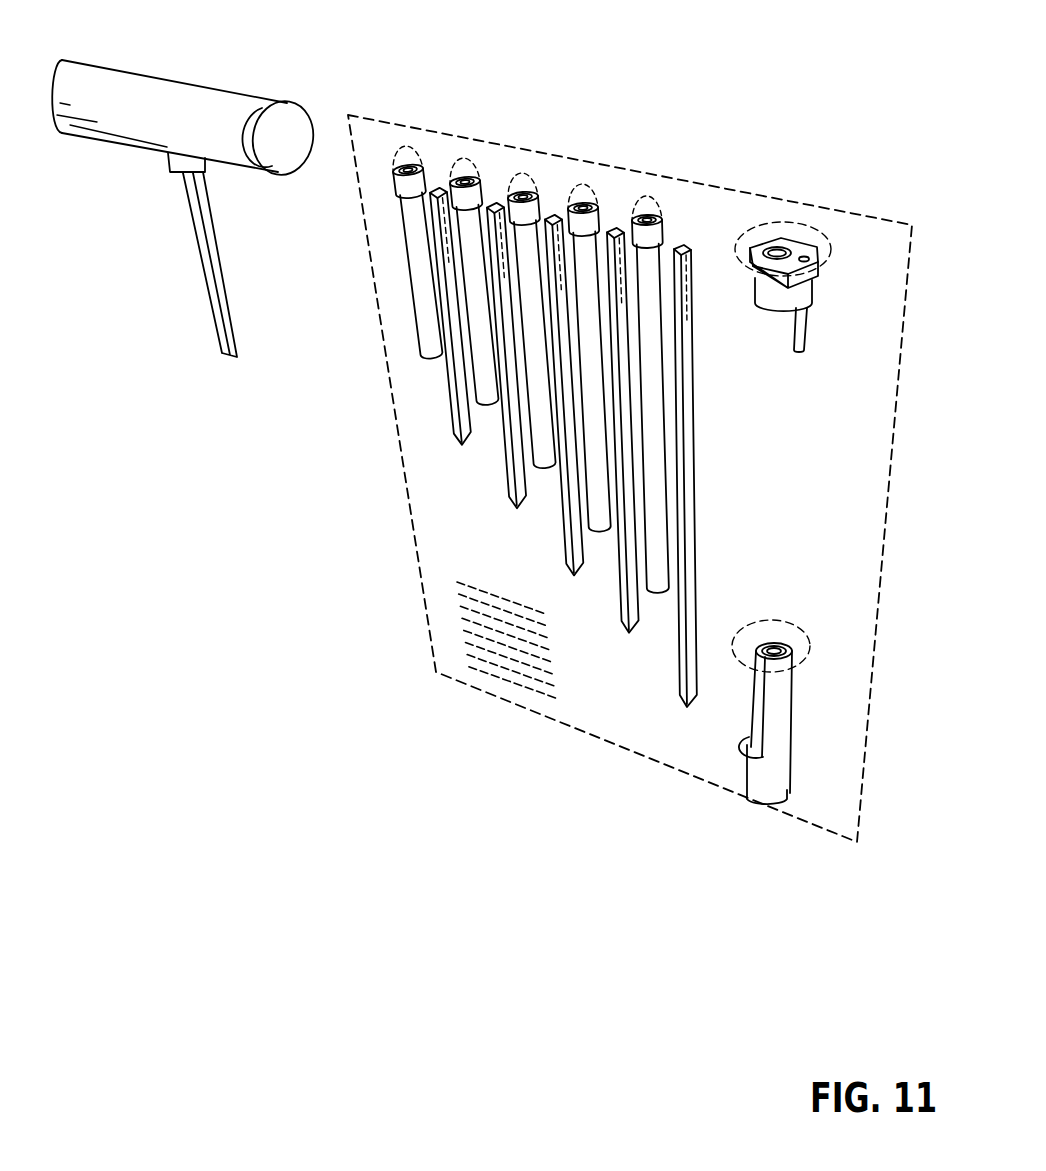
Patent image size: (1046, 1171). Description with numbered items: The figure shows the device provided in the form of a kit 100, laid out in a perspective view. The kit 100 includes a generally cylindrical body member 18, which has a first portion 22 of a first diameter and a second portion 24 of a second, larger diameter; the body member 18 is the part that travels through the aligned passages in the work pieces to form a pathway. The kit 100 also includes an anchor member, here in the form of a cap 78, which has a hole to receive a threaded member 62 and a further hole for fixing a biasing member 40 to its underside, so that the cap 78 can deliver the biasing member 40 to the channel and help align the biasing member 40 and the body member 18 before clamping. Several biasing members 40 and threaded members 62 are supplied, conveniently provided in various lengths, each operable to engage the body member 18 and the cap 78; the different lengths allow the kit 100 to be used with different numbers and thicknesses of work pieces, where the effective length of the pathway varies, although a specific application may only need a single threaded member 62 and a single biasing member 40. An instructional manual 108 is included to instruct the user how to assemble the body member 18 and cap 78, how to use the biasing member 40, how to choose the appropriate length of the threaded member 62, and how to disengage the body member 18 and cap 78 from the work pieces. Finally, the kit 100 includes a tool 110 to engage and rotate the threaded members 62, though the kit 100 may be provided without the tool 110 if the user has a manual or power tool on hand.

The kit 100 is at (495, 92).
The tool 110 is at (188, 340).
The threaded member 62 is at (428, 329).
The biasing member 40 is at (458, 416).
The instructional manual 108 is at (445, 681).
The cap 78 is at (797, 247).
The body member 18 is at (735, 767).
The first portion 22 is at (757, 715).
The second portion 24 is at (758, 793).